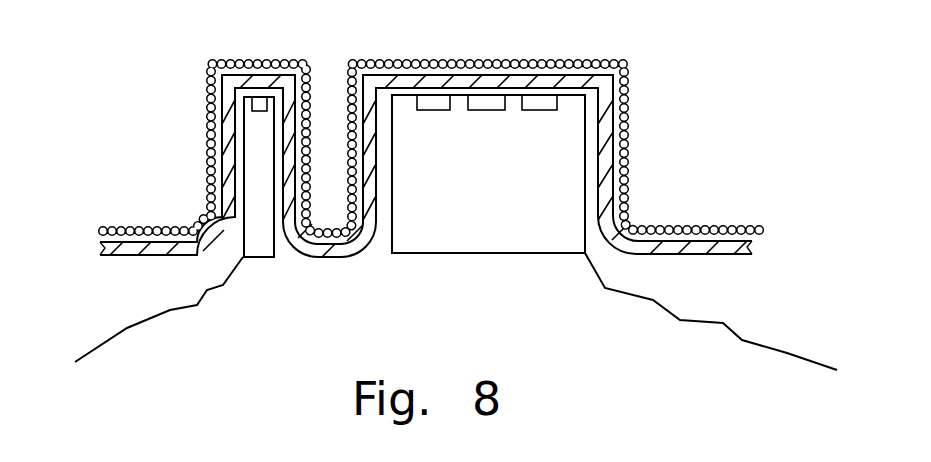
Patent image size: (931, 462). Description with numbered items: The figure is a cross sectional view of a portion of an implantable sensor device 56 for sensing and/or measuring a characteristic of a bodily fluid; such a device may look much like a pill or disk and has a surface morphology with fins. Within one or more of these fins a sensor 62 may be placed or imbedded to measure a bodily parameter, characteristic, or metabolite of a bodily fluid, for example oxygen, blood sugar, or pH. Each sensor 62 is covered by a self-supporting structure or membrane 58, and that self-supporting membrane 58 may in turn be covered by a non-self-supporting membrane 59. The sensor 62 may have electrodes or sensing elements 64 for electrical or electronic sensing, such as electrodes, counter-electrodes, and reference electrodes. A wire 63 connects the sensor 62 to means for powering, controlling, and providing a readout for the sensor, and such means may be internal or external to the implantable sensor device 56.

The implantable sensor device 56 is at (688, 187).
The self-supporting membrane 58 is at (605, 147).
The non-self-supporting membrane 59 is at (627, 90).
The sensor 62 is at (260, 247).
The wire 63 is at (122, 330).
The electrodes or sensing elements 64 is at (258, 112).